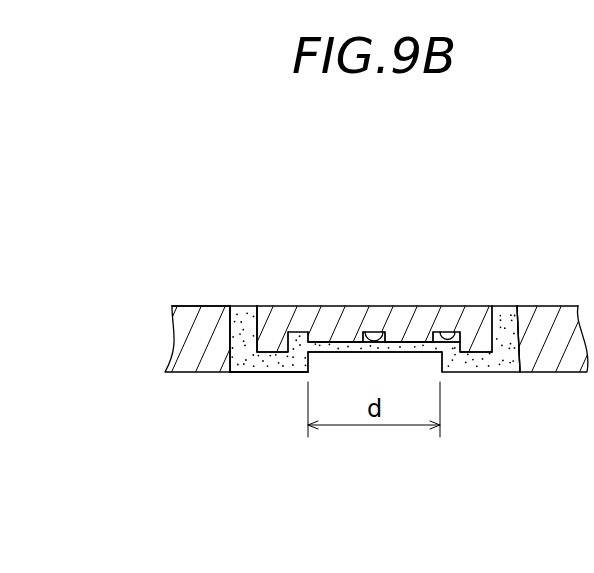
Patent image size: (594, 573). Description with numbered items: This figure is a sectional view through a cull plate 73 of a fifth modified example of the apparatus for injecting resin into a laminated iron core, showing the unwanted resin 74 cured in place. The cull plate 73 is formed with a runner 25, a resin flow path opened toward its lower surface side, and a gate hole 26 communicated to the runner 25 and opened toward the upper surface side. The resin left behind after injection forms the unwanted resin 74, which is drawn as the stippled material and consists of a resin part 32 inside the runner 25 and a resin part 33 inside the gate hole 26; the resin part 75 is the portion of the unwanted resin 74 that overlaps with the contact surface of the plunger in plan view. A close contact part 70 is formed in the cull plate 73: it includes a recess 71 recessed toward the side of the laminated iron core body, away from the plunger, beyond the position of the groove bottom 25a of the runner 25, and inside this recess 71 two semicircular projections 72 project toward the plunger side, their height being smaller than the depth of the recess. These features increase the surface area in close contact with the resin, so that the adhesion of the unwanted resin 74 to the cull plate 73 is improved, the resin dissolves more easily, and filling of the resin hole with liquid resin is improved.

The runner 25 is at (285, 306).
The groove bottom 25a is at (258, 306).
The gate hole 26 is at (222, 306).
The resin part 32 is at (257, 372).
The resin part 33 is at (232, 322).
The close contact part 70 is at (425, 332).
The recess 71 is at (313, 332).
The semicircular projection 72 is at (337, 342).
The cull plate 73 is at (167, 348).
The unwanted resin 74 is at (282, 374).
The resin part 75 is at (357, 345).